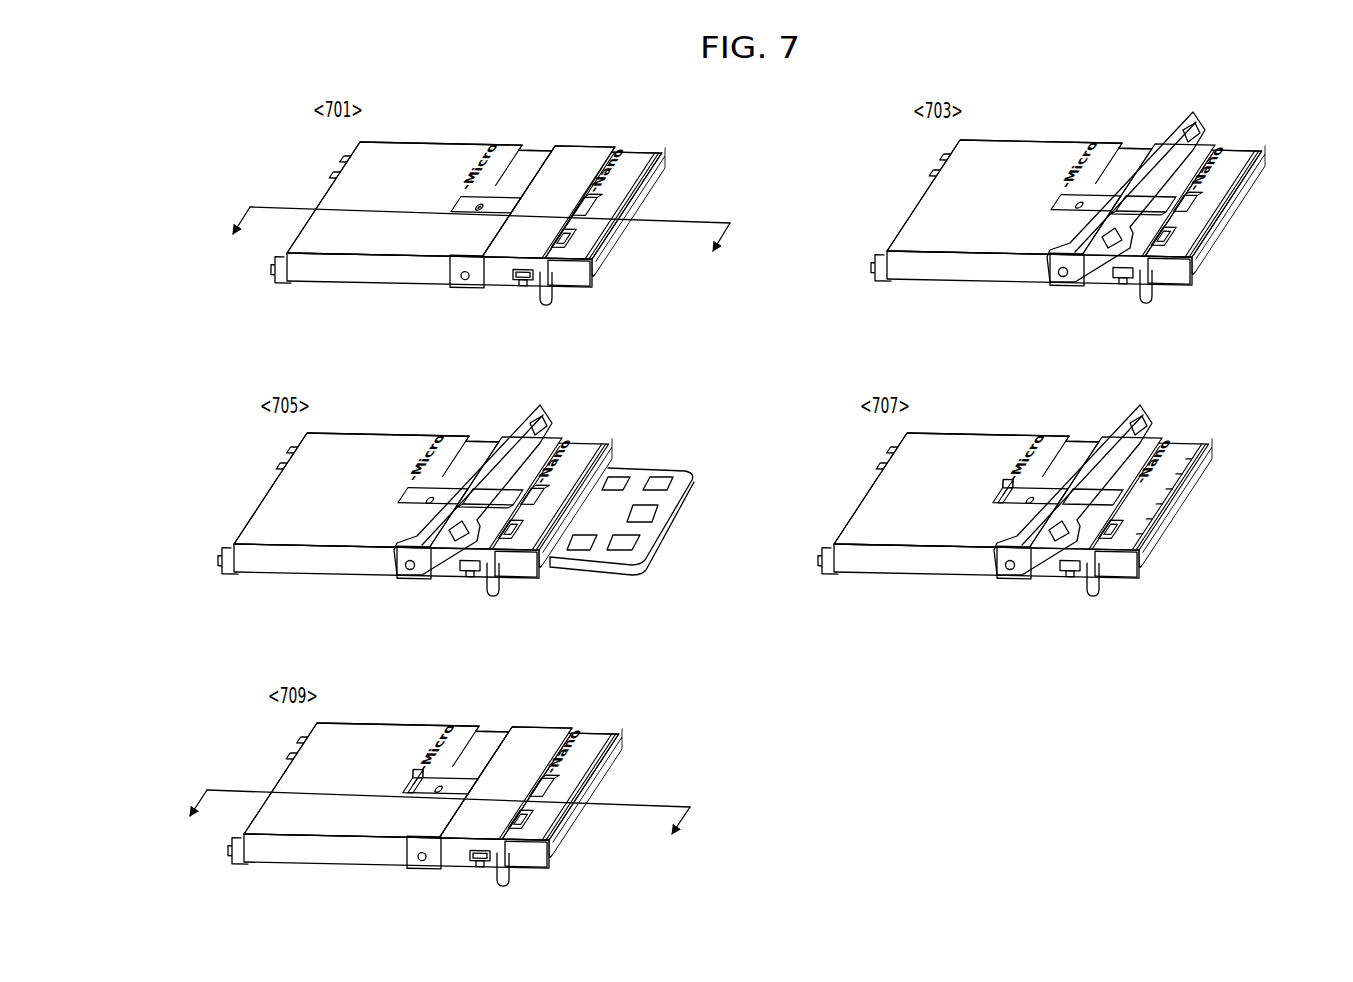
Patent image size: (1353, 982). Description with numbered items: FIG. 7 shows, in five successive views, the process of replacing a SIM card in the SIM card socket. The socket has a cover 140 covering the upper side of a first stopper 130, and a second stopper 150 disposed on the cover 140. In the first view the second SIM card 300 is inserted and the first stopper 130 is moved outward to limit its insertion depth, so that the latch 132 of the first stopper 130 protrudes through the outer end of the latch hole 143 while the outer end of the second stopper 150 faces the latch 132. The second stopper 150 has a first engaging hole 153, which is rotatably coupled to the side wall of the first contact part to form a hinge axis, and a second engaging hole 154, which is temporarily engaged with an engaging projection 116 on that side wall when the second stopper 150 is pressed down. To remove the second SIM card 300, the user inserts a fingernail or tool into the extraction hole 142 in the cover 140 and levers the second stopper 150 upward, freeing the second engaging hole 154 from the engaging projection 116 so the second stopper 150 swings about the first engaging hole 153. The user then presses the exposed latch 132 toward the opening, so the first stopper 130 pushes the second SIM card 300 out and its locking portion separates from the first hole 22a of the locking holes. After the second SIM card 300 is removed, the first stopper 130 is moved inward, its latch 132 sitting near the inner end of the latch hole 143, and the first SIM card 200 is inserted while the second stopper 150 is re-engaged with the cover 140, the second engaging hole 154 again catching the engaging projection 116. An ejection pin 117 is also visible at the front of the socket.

The cover 140 is at (383, 152).
The first stopper 130 is at (500, 207).
The second stopper 150 is at (582, 152).
The second SIM card 300 is at (657, 190).
The latch hole 143 is at (593, 208).
The extraction hole 142 is at (597, 265).
The first engaging hole 153 is at (450, 283).
The second engaging hole 154 is at (510, 275).
The engaging projection 116 is at (523, 279).
The ejection pin 117 is at (545, 293).
The latch 132 is at (1198, 198).
The first hole 22a is at (428, 502).
The first SIM card 200 is at (622, 773).